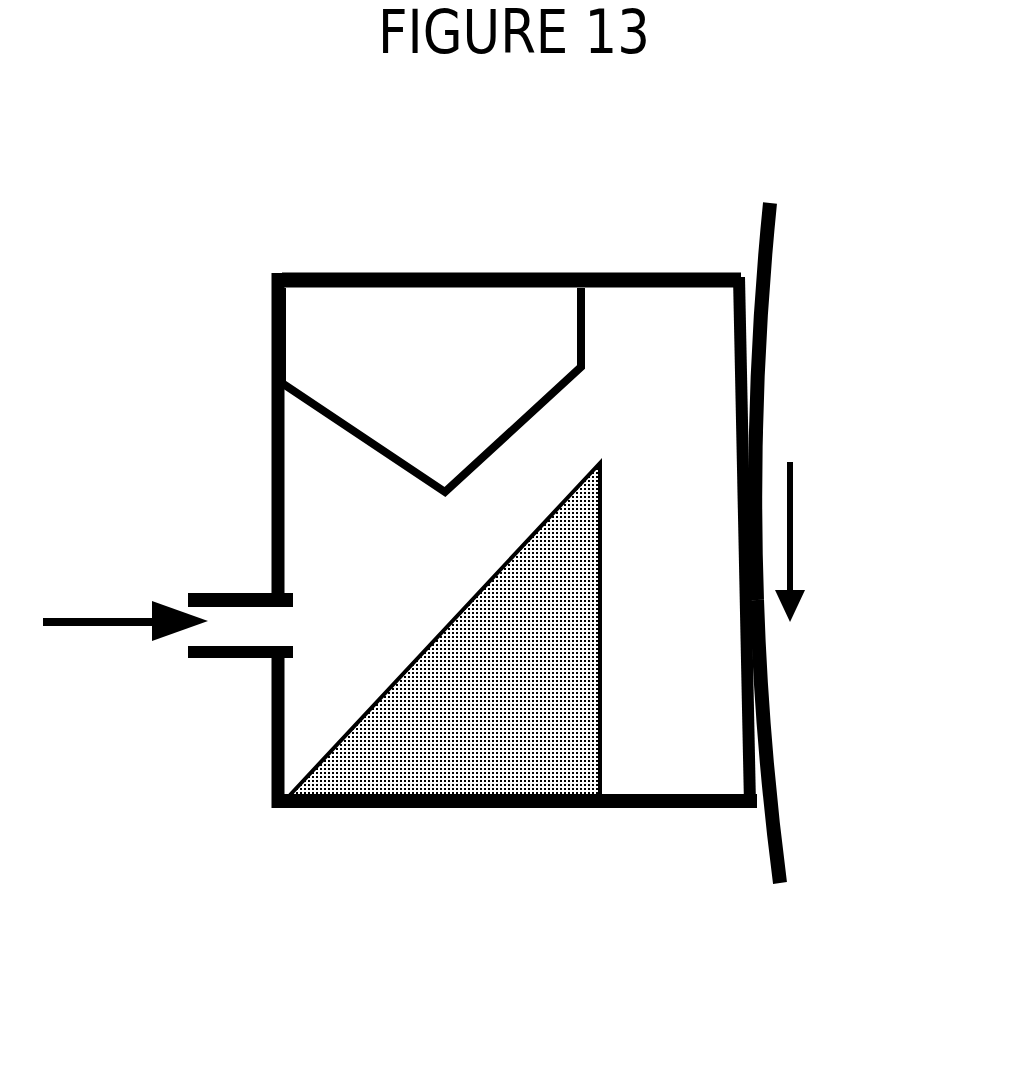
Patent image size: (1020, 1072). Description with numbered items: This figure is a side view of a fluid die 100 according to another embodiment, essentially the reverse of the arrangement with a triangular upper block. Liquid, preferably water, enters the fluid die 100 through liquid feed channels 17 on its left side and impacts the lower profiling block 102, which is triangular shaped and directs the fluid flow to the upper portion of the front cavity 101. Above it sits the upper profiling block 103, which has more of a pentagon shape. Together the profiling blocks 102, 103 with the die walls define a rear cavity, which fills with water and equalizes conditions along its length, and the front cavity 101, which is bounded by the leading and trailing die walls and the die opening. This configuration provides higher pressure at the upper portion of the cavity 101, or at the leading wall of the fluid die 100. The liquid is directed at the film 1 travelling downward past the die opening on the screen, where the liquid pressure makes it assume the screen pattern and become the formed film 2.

The film 1 is at (773, 222).
The formed film 2 is at (787, 872).
The liquid feed channels 17 is at (200, 692).
The fluid die 100 is at (628, 808).
The front cavity 101 is at (697, 757).
The first liquid profiling block 102 is at (527, 598).
The second profiling block 103 is at (527, 333).